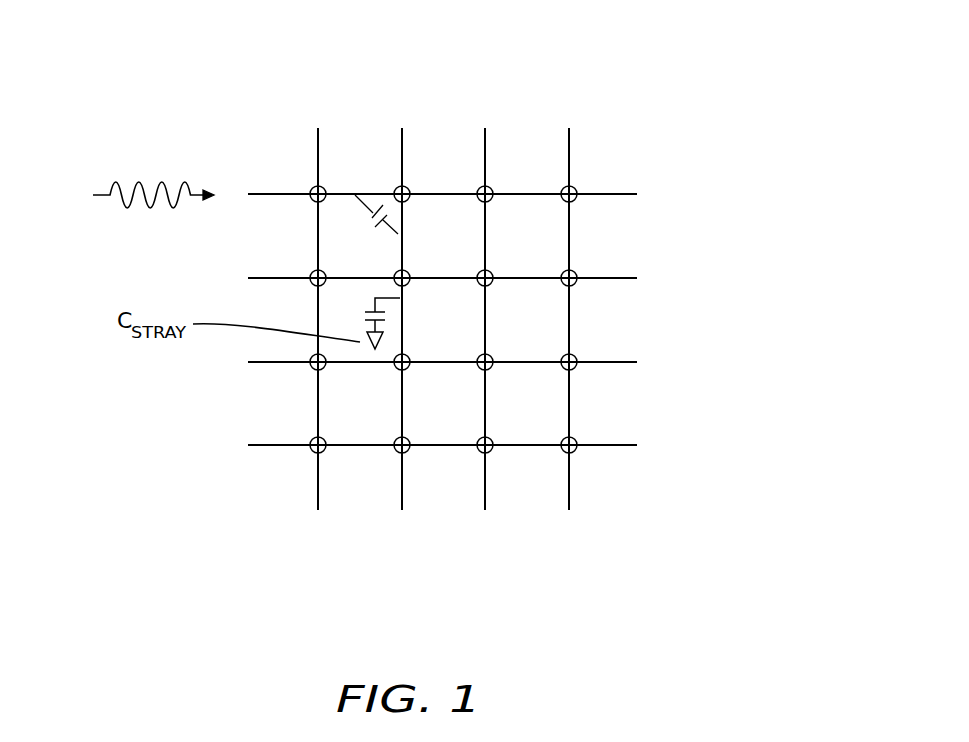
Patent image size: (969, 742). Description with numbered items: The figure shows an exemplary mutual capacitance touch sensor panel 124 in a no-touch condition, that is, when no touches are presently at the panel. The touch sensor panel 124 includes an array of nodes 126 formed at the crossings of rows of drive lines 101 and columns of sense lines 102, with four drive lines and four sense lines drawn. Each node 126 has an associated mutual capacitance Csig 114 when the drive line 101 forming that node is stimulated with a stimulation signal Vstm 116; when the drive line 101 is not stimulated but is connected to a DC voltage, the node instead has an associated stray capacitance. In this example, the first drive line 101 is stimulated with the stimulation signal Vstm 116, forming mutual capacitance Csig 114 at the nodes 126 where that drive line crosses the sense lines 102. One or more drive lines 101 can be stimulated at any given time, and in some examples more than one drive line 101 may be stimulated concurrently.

The drive line 101 is at (263, 192).
The sense line 102 is at (398, 498).
The mutual capacitance Csig 114 is at (371, 222).
The stimulation signal Vstm 116 is at (125, 207).
The touch sensor panel 124 is at (640, 139).
The node 126 is at (406, 192).